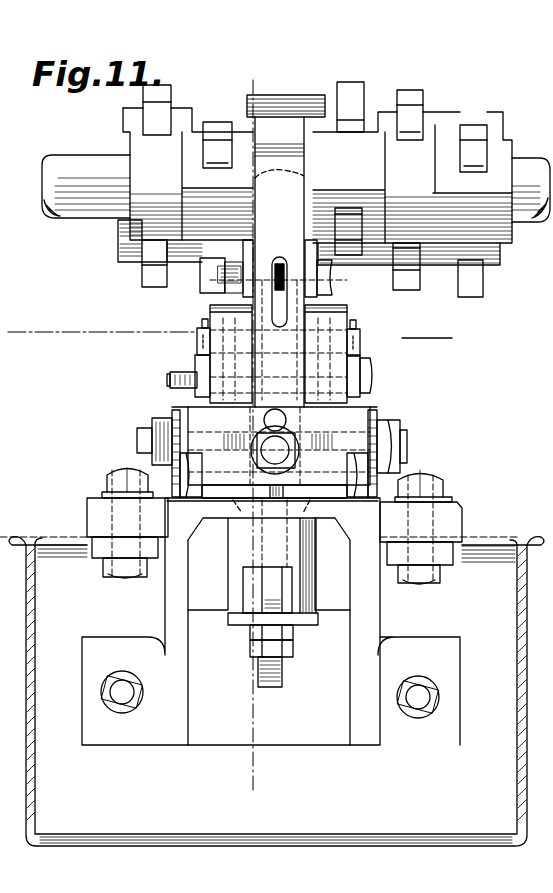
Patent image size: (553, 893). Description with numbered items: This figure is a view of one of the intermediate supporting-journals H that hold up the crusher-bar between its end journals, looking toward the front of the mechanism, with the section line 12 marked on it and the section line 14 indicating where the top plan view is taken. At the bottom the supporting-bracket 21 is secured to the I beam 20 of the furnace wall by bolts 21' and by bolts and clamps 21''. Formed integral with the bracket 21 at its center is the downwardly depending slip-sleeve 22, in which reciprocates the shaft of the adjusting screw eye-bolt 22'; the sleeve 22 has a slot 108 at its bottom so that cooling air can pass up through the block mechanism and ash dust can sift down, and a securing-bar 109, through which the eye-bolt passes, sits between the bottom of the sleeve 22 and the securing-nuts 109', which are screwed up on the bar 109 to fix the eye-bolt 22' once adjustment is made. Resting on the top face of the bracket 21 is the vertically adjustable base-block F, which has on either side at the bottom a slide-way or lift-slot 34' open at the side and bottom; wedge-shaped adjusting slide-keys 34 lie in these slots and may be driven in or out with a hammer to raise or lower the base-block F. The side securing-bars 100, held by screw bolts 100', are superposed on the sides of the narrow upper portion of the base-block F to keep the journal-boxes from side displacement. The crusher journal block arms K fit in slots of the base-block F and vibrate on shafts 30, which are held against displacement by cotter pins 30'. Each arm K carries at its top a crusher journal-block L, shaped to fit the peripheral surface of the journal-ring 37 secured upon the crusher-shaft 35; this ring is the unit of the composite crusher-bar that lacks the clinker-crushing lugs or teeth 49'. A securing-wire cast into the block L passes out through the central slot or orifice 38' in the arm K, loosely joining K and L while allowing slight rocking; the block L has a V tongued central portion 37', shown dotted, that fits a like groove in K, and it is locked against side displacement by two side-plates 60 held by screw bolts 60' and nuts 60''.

The section line 12 is at (250, 77).
The crusher-shaft 35 is at (86, 186).
The journal-ring 37 is at (286, 96).
The V tongued peripheral portion 37' is at (301, 168).
The clinker-crushing lugs or teeth 49' is at (411, 195).
The crusher journal-block L is at (302, 162).
The crusher journal block arm K is at (278, 262).
The central slot or orifice 38' is at (283, 279).
The nuts 60'' is at (165, 272).
The side-plates 60 is at (272, 272).
The screw bolts 60' is at (296, 277).
The cotter pins 30' is at (269, 315).
The shafts 30 is at (293, 342).
The section line 14 is at (437, 340).
The screw bolts 100' is at (161, 377).
The side securing-bars 100 is at (262, 378).
The adjusting slide-keys 34 is at (276, 443).
The slide-way or lift-slot 34' is at (309, 453).
The base-block F is at (274, 452).
The bolts and clamps 21'' is at (271, 526).
The supporting-bracket 21 is at (258, 621).
The bolts 21' is at (275, 687).
The slot 108 is at (252, 588).
The slip-sleeve 22 is at (302, 556).
The securing-bar 109 is at (257, 633).
The securing-nuts 109' is at (289, 642).
The adjusting screw eye-bolt 22' is at (261, 685).
The intermediate supporting-journal H is at (213, 738).
The I beam 20 is at (516, 750).